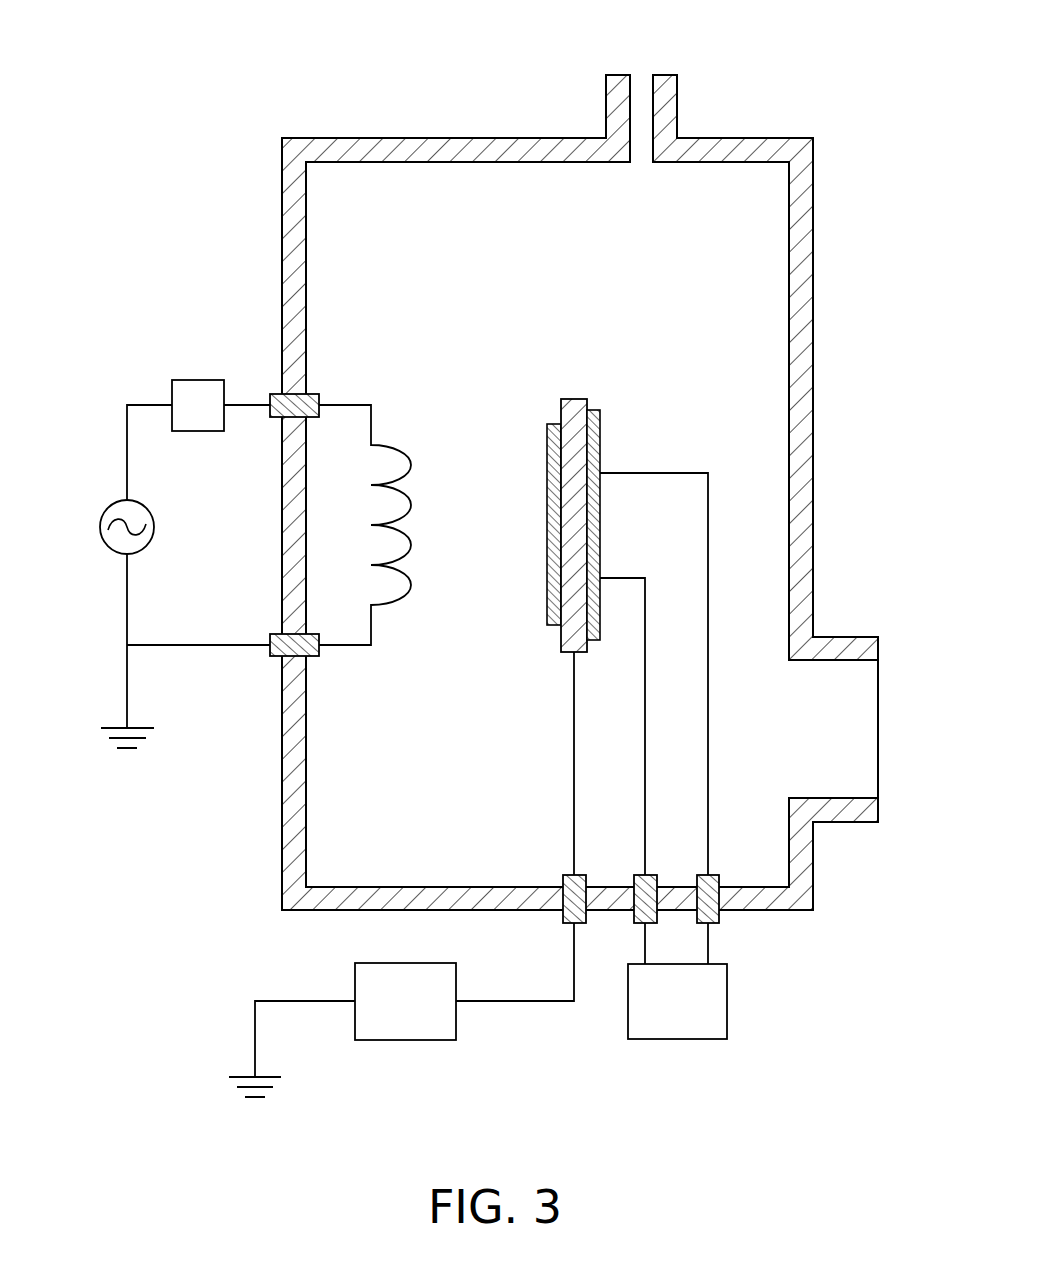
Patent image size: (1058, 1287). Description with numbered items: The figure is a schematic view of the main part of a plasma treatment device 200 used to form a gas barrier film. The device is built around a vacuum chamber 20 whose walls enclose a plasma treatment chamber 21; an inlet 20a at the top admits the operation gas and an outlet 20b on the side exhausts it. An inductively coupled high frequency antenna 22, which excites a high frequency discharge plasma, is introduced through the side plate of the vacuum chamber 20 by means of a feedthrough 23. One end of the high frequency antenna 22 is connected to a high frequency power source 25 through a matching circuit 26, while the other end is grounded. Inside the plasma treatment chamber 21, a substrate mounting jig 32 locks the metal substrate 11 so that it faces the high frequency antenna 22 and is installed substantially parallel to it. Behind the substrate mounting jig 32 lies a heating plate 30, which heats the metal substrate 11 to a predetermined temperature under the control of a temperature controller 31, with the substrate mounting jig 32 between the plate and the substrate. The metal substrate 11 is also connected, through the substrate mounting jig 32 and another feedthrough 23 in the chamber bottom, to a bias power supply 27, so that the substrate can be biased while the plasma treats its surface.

The plasma treatment device 200 is at (236, 101).
The vacuum chamber 20 is at (813, 285).
The inlet for operation gas 20a is at (642, 74).
The outlet for operation gas 20b is at (878, 730).
The plasma treatment chamber 21 is at (723, 235).
The inductively coupled high frequency antenna 22 is at (393, 445).
The feedthrough 23 is at (273, 392).
The high frequency power source 25 is at (100, 524).
The matching circuit 26 is at (196, 379).
The bias power supply 27 is at (405, 1040).
The heating plate 30 is at (600, 422).
The temperature controller 31 is at (677, 1039).
The substrate mounting jig 32 is at (573, 398).
The metal substrate 11 is at (547, 612).